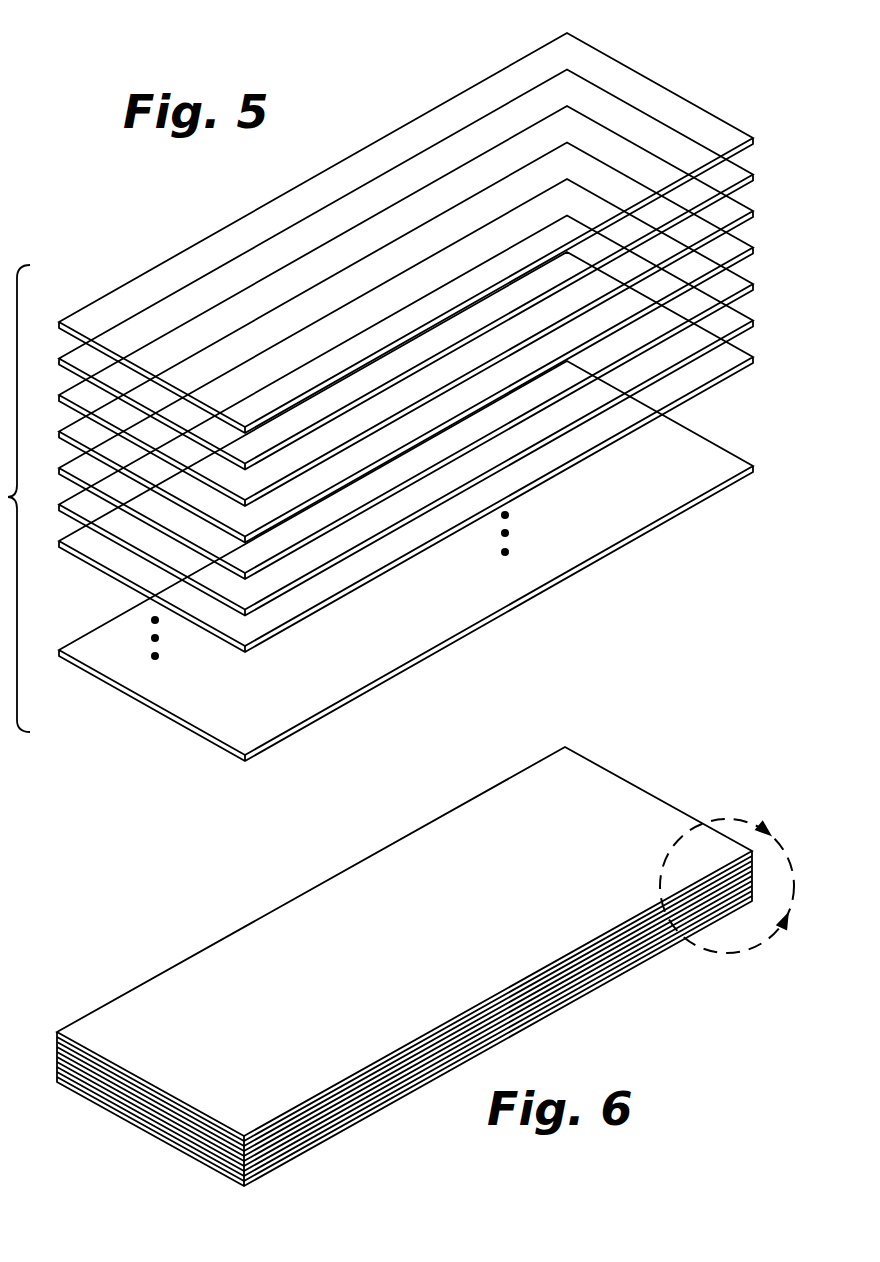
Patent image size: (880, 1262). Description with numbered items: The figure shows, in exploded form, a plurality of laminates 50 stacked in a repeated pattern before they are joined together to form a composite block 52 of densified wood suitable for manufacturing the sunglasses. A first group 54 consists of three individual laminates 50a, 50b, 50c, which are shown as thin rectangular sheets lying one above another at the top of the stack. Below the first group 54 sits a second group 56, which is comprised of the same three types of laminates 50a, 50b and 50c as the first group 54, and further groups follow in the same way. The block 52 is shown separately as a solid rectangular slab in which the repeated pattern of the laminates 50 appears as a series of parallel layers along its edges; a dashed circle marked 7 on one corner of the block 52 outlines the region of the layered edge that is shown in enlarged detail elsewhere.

In FIG. 5, the laminates 50 is at (706, 72).
In FIG. 5, the first laminate 50a is at (735, 133).
In FIG. 5, the second laminate 50b is at (738, 168).
In FIG. 5, the third laminate 50c is at (735, 205).
In FIG. 5, the first group 54 is at (822, 119).
In FIG. 5, the second group 56 is at (764, 240).
In FIG. 6, the block 52 is at (625, 737).
In FIG. 6, the detail region shown in FIG. 7 is at (727, 886).